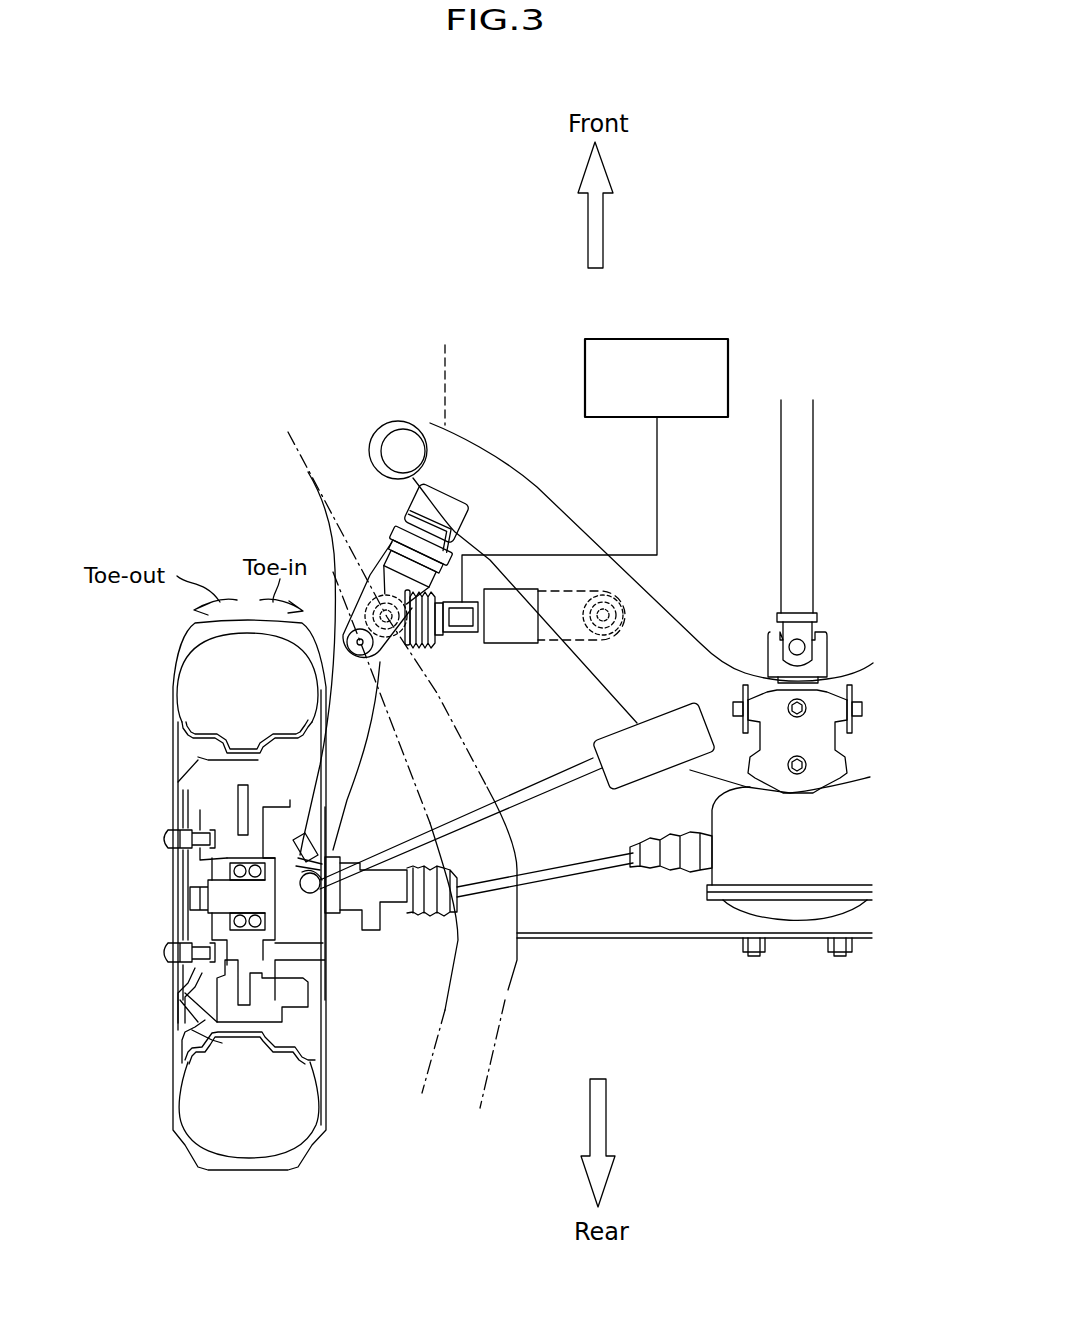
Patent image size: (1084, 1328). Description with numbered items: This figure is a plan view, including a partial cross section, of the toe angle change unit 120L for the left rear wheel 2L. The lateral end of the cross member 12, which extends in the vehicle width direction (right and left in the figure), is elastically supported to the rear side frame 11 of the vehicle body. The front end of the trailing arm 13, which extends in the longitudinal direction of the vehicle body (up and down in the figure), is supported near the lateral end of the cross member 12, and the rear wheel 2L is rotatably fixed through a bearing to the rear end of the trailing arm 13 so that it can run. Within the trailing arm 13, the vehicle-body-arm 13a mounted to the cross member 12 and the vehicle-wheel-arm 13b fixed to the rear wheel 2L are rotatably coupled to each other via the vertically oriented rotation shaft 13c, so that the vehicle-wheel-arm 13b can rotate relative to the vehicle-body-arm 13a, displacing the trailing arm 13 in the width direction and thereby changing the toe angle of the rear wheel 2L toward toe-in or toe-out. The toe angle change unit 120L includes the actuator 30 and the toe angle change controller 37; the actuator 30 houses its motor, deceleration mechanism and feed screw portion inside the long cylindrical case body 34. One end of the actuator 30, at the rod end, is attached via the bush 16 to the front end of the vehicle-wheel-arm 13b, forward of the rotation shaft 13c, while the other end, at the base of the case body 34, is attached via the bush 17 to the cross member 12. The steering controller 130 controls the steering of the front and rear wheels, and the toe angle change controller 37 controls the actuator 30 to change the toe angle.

The toe angle change unit 120L is at (346, 308).
The steering controller 130 is at (690, 340).
The rear side frame 11 is at (447, 358).
The cross member 12 is at (675, 640).
The trailing arm 13 is at (352, 758).
The vehicle-body-arm 13a is at (407, 507).
The vehicle-wheel-arm 13b is at (313, 797).
The rotation shaft 13c is at (348, 613).
The bush 16 is at (395, 643).
The bush 17 is at (615, 593).
The actuator 30 is at (553, 590).
The case body 34 is at (498, 623).
The toe angle change controller 37 is at (460, 634).
The left rear wheel 2L is at (245, 1175).